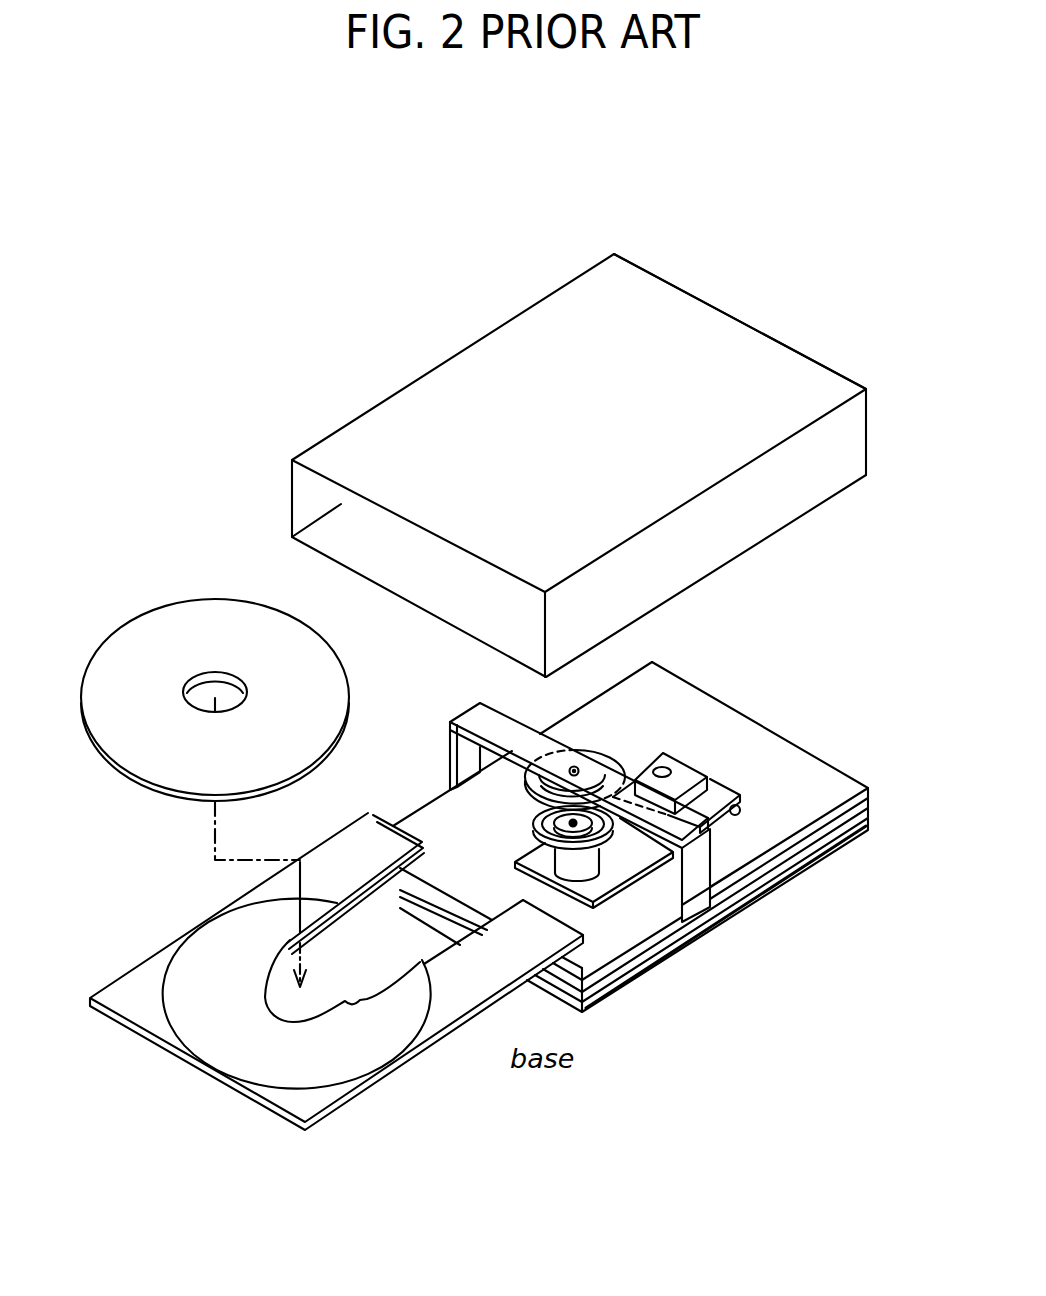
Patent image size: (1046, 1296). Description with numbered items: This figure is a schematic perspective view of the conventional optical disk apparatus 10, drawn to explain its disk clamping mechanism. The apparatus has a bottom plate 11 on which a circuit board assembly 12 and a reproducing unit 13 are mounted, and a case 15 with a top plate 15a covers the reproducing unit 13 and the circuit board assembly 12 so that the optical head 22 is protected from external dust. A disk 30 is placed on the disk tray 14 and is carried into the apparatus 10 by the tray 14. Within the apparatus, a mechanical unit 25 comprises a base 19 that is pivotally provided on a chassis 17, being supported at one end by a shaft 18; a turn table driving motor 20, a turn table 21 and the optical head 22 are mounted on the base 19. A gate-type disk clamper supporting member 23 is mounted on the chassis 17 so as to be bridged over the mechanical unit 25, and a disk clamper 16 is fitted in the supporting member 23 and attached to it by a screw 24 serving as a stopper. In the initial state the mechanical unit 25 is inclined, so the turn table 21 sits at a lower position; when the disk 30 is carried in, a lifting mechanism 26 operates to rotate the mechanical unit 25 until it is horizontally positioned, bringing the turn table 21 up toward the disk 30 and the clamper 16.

The optical disk apparatus 10 is at (709, 212).
The bottom plate 11 is at (770, 892).
The circuit board assembly 12 is at (803, 858).
The reproducing unit 13 is at (815, 738).
The disk tray 14 is at (377, 1073).
The case 15 is at (535, 299).
The top plate 15a is at (740, 329).
The disk clamper 16 is at (604, 752).
The chassis 17 is at (820, 810).
The shaft 18 is at (741, 808).
The base 19 is at (583, 905).
The turn table driving motor 20 is at (592, 867).
The turn table 21 is at (620, 842).
The optical head 22 is at (688, 774).
The gate-type disk clamper supporting member 23 is at (500, 713).
The screw 24 is at (574, 766).
The mechanical unit 25 is at (660, 882).
The lifting mechanism 26 is at (512, 845).
The disk 30 is at (213, 597).